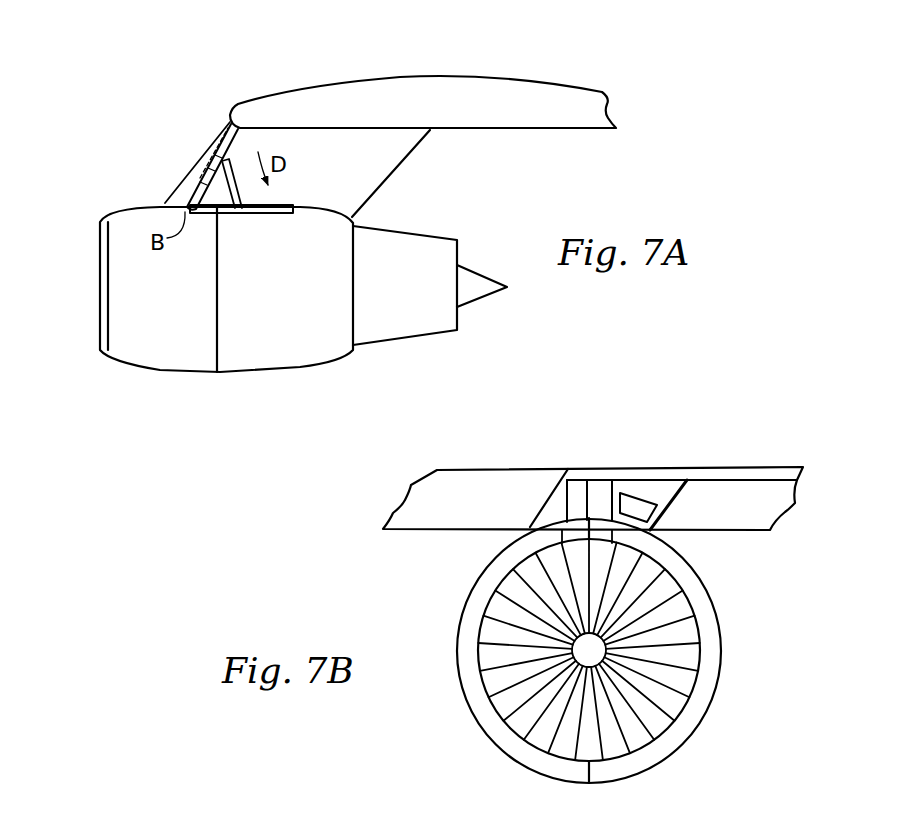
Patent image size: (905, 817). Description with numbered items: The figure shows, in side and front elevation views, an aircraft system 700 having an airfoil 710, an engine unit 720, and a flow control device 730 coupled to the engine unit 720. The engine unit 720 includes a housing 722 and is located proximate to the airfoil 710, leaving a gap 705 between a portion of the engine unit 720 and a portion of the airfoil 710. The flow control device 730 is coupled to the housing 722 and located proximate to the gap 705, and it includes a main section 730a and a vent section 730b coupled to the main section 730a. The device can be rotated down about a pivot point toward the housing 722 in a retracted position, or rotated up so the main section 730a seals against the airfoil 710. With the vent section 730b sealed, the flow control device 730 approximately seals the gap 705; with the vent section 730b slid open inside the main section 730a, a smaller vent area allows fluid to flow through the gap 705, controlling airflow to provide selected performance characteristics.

In FIG. 7A, the aircraft system 700 is at (180, 40).
In FIG. 7B, the aircraft system 700 is at (475, 432).
In FIG. 7A, the gap 705 is at (140, 163).
In FIG. 7B, the gap 705 is at (630, 540).
In FIG. 7A, the airfoil 710 is at (490, 78).
In FIG. 7B, the airfoil 710 is at (765, 467).
In FIG. 7A, the engine unit 720 is at (222, 385).
In FIG. 7B, the engine unit 720 is at (730, 730).
In FIG. 7A, the housing 722 is at (165, 338).
In FIG. 7B, the housing 722 is at (458, 680).
In FIG. 7A, the flow control device 730 is at (192, 147).
In FIG. 7B, the flow control device 730 is at (665, 458).
In FIG. 7A, the main section 730a is at (205, 150).
In FIG. 7B, the main section 730a is at (645, 492).
In FIG. 7A, the vent section 730b is at (200, 178).
In FIG. 7B, the vent section 730b is at (650, 528).